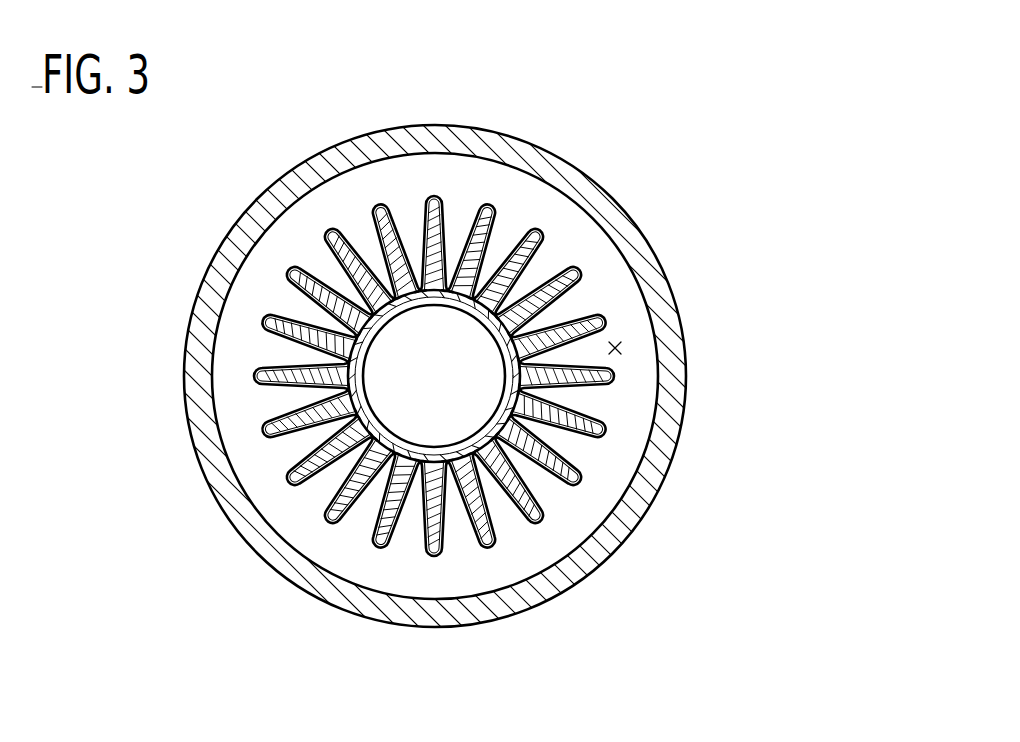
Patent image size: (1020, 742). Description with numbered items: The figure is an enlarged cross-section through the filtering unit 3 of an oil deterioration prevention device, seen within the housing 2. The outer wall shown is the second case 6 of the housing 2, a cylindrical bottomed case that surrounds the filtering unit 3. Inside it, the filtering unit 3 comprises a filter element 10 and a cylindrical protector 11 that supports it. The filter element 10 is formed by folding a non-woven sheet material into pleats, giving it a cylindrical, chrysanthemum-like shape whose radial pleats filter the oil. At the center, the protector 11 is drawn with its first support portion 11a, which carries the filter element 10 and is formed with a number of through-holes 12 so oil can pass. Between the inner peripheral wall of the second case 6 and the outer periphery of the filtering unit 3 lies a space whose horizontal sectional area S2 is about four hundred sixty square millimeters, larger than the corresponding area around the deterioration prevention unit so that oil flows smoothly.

The housing 2 is at (524, 124).
The second case 6 is at (618, 228).
The filtering unit 3 is at (508, 413).
The filter element 10 is at (583, 437).
The protector 11 is at (434, 376).
The first support portion 11a is at (366, 334).
The through-holes 12 is at (365, 368).
The horizontal sectional area S2 is at (620, 350).